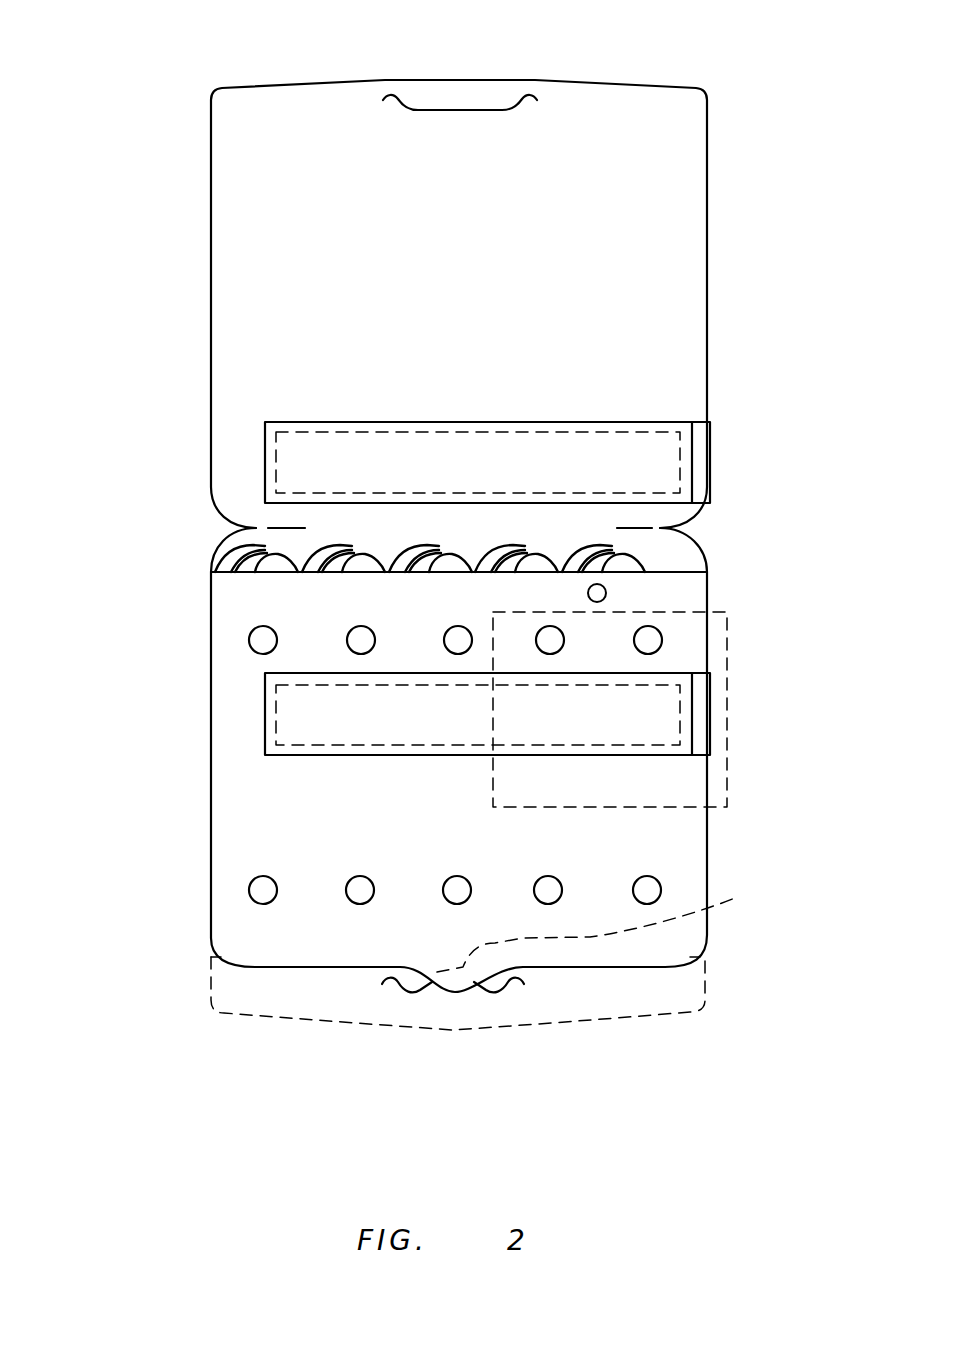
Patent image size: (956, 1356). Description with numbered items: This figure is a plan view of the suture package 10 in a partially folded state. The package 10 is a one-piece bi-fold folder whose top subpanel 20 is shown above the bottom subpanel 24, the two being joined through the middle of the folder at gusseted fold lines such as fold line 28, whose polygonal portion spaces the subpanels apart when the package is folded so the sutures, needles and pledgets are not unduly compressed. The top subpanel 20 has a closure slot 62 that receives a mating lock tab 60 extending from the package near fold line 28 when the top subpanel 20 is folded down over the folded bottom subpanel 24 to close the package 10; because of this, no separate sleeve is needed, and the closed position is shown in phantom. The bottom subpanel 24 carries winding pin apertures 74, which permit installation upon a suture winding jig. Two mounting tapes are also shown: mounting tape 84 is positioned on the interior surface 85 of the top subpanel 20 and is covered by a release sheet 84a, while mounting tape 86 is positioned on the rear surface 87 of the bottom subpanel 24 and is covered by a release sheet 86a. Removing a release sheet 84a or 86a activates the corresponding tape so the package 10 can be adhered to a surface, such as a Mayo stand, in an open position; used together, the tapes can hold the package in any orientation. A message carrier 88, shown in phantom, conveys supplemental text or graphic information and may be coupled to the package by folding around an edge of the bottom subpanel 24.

The suture package 10 is at (168, 480).
The top subpanel 20 is at (233, 335).
The bottom subpanel 24 is at (237, 839).
The gusseted fold line 28 is at (257, 968).
The lock tab 60 is at (463, 993).
The closure slot 62 is at (462, 110).
The winding pin apertures 74 is at (263, 890).
The mounting tape 84 is at (645, 447).
The release sheet 84a is at (702, 466).
The interior surface 85 is at (490, 266).
The mounting tape 86 is at (300, 716).
The release sheet 86a is at (265, 737).
The rear surface 87 is at (357, 848).
The message carrier 88 is at (660, 782).